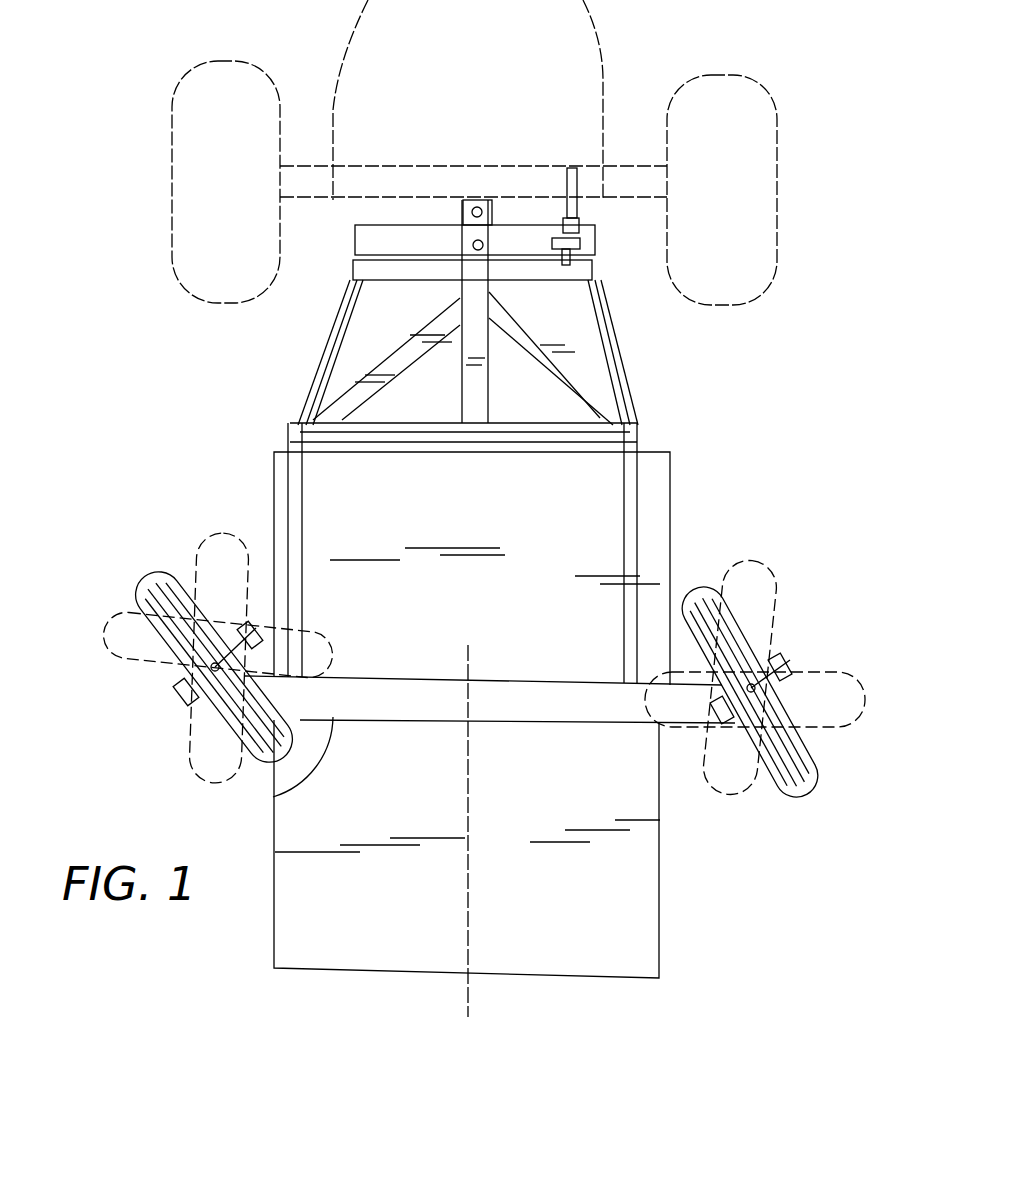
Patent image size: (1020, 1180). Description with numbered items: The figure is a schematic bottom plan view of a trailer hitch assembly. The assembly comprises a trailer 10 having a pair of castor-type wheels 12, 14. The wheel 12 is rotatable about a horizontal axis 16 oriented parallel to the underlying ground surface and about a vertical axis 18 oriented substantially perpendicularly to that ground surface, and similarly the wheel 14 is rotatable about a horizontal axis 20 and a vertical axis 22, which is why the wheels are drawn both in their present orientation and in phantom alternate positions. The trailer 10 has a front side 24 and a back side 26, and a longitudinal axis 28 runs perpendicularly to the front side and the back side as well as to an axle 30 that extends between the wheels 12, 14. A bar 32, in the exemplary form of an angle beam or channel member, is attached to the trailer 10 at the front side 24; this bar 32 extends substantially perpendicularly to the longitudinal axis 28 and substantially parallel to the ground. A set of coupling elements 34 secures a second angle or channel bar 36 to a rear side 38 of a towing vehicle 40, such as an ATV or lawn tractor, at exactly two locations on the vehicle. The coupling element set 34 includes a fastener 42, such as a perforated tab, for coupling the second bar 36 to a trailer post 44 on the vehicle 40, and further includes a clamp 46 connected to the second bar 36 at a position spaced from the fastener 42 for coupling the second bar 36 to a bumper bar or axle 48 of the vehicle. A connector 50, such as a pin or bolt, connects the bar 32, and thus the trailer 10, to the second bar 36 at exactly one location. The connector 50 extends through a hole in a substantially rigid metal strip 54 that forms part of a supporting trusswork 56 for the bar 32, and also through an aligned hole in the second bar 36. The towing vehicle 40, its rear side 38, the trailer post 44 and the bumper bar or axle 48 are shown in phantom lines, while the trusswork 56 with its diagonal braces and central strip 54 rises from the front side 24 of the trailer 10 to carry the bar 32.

The trailer 10 is at (662, 931).
The castor-type wheel 12 is at (160, 580).
The castor-type wheel 14 is at (703, 590).
The horizontal axis 16 is at (128, 755).
The vertical axis 18 is at (215, 667).
The horizontal axis 20 is at (758, 686).
The vertical axis 22 is at (752, 688).
The front side 24 is at (655, 452).
The back side 26 is at (330, 970).
The longitudinal axis 28 is at (468, 1005).
The axle 30 is at (280, 771).
The bar 32 is at (558, 275).
The set of coupling elements 34 is at (343, 285).
The second bar 36 is at (357, 248).
The rear side 38 is at (268, 198).
The towing vehicle 40 is at (178, 287).
The fastener 42 is at (495, 212).
The trailer post 44 is at (473, 198).
The clamp 46 is at (582, 212).
The bumper bar or axle 48 is at (640, 170).
The connector 50 is at (473, 248).
The rigid metal strip 54 is at (484, 382).
The supporting trusswork 56 is at (622, 378).